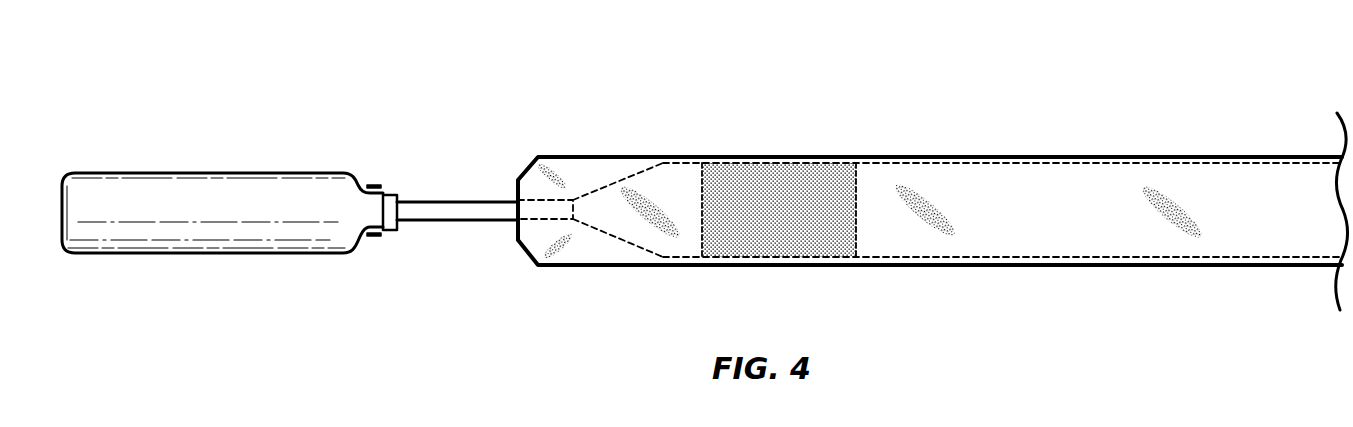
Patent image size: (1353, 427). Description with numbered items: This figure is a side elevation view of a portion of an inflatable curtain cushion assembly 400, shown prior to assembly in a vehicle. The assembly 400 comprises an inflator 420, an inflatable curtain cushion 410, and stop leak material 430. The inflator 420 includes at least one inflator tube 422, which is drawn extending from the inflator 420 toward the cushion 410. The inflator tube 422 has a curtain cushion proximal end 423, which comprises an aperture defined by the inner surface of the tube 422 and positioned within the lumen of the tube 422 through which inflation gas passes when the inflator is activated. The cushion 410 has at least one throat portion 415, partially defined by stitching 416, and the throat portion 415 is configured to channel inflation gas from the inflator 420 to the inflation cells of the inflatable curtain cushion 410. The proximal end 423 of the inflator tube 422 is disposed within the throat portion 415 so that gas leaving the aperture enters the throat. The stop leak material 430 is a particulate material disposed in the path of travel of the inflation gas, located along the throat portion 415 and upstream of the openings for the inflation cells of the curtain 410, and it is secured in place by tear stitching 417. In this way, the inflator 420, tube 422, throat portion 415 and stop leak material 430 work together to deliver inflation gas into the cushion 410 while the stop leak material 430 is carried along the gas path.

The inflatable curtain cushion assembly 400 is at (993, 80).
The inflatable curtain cushion 410 is at (607, 165).
The throat portion 415 is at (662, 183).
The stitching 416 is at (1107, 158).
The tear stitching 417 is at (702, 237).
The inflator 420 is at (277, 195).
The inflator tube 422 is at (445, 222).
The curtain cushion proximal end 423 is at (553, 210).
The stop leak material 430 is at (783, 177).